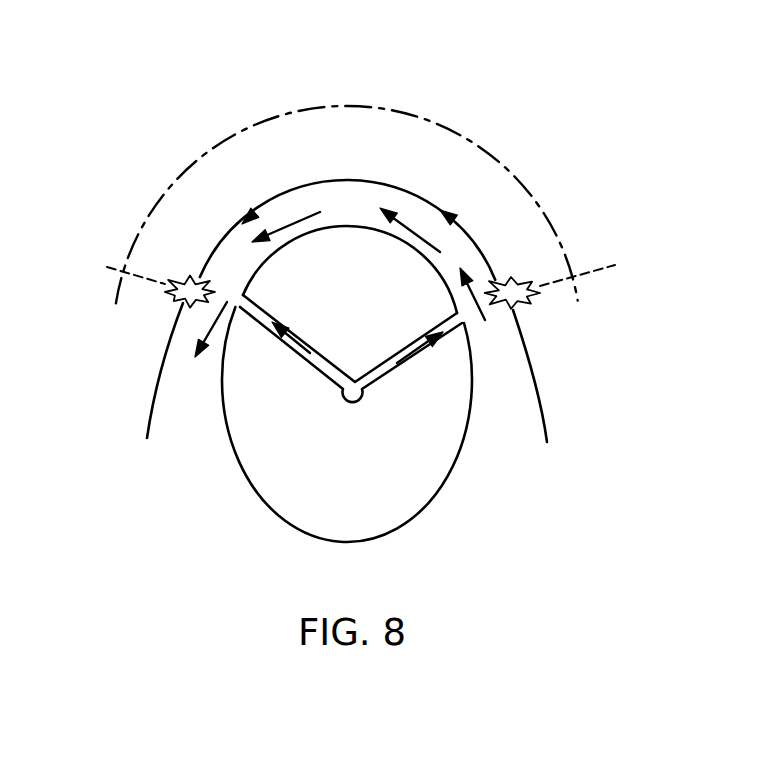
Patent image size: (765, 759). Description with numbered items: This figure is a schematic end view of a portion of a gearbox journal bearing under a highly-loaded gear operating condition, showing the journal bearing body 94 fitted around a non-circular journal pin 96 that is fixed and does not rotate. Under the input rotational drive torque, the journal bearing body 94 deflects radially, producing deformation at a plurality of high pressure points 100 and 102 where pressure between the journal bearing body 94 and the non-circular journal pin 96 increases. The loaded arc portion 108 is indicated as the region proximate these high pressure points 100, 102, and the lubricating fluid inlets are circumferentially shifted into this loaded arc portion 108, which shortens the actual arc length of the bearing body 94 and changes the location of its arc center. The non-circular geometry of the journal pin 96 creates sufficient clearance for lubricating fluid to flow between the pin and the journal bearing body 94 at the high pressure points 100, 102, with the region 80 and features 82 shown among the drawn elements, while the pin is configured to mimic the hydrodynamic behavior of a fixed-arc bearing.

The flow channel 80 is at (412, 227).
The valve arms 82 is at (237, 298).
The journal bearing body 94 is at (338, 178).
The non-circular journal pin 96 is at (437, 497).
The high pressure point 100 is at (177, 303).
The high pressure point 102 is at (518, 275).
The loaded arc portion 108 is at (293, 108).